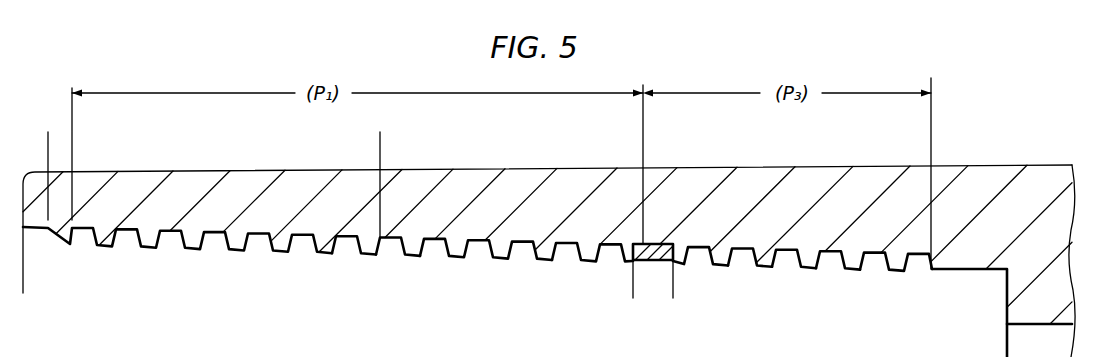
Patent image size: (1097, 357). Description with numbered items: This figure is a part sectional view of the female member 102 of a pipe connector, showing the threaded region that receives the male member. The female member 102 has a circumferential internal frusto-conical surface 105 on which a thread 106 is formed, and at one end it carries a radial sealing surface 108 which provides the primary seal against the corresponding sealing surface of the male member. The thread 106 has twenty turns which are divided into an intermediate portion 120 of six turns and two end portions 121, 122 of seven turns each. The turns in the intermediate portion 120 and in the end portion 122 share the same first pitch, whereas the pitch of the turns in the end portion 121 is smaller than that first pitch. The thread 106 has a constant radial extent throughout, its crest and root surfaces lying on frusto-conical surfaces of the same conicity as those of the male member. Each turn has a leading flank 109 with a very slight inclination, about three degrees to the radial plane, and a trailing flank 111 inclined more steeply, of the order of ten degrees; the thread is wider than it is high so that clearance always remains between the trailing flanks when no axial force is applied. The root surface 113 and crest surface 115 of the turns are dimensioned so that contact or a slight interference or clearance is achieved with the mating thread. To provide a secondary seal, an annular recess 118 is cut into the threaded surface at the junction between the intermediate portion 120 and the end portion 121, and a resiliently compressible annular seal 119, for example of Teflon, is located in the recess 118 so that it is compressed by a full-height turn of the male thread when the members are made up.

The female member 102 is at (987, 173).
The circumferential internal frusto-conical surface 105 is at (756, 272).
The thread 106 is at (365, 256).
The radial sealing surface 108 is at (1007, 308).
The leading flank 109 is at (603, 258).
The trailing flank 111 is at (395, 257).
The root surface 113 is at (815, 268).
The crest surface 115 is at (828, 253).
The annular recess 118 is at (661, 244).
The resiliently compressible annular seal 119 is at (654, 262).
The intermediate portion 120 is at (643, 137).
The end portion 121 is at (931, 137).
The end portion 122 is at (380, 137).